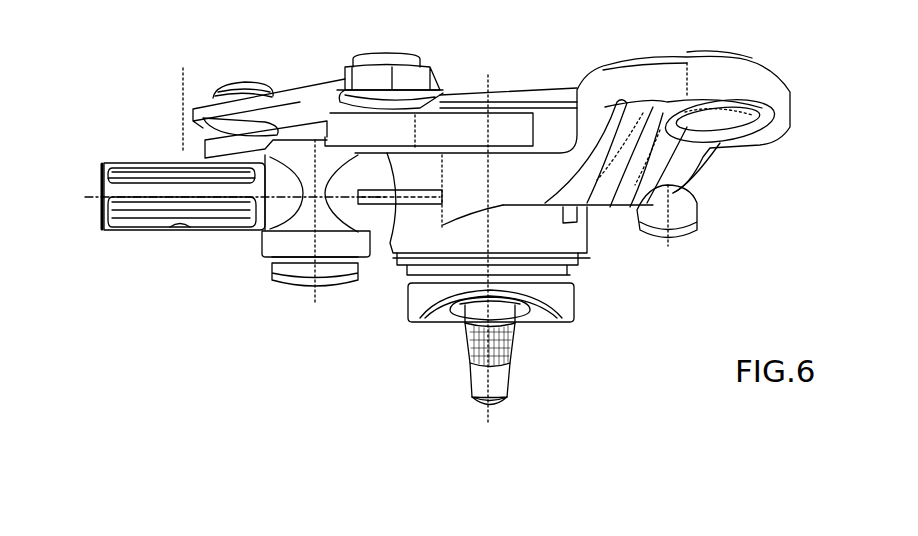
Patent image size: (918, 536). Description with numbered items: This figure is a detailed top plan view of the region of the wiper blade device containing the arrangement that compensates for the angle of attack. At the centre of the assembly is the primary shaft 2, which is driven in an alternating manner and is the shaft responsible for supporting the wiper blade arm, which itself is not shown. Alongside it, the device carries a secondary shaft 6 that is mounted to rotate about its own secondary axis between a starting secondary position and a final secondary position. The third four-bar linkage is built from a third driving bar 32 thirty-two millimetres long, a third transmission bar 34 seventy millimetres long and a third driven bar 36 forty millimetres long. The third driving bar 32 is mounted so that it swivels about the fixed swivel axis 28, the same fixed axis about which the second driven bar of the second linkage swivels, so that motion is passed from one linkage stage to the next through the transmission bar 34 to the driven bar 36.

The primary shaft 2 is at (500, 385).
The secondary shaft 6 is at (560, 268).
The fixed swivel axis 28 is at (313, 295).
The third driving bar 32 is at (247, 138).
The third transmission bar 34 is at (303, 88).
The third driven bar 36 is at (430, 130).